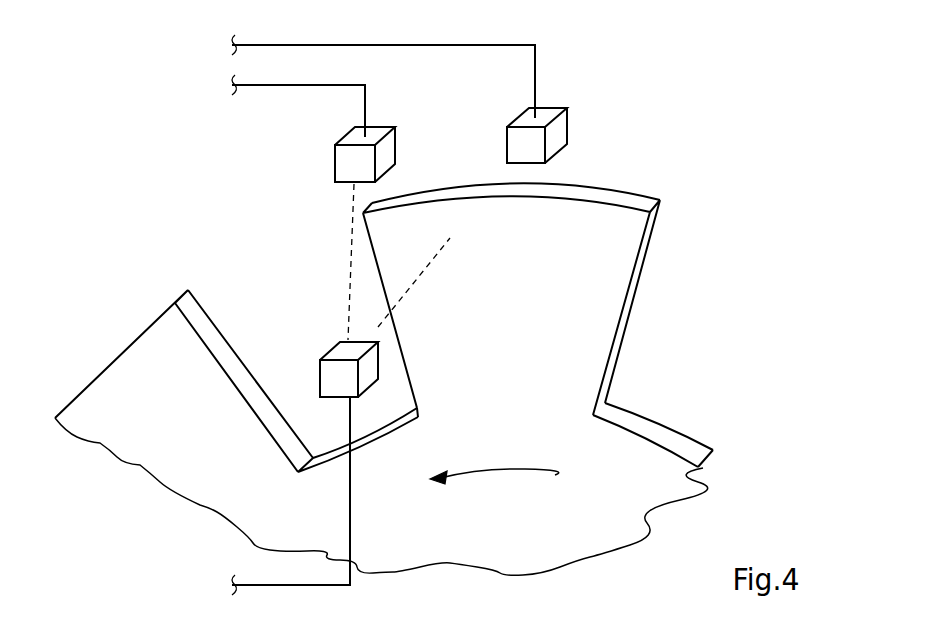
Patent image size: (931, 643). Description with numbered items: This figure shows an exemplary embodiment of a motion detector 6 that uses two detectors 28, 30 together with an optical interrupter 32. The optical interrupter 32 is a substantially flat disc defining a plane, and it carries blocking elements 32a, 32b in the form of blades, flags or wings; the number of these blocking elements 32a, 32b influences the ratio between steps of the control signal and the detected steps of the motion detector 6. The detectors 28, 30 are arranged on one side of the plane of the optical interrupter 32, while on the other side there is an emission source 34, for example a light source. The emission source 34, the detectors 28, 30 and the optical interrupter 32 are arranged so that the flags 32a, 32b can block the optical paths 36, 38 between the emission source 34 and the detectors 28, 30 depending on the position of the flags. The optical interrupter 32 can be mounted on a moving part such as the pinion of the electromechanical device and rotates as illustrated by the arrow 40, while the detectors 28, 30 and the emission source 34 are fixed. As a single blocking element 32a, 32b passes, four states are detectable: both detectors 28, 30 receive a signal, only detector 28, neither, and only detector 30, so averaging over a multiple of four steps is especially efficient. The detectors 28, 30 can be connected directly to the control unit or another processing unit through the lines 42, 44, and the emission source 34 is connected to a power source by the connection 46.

The motion detector 6 is at (118, 142).
The detector 28 is at (397, 140).
The detector 30 is at (567, 123).
The optical interrupter 32 is at (640, 465).
The blocking element 32a is at (610, 238).
The blocking element 32b is at (158, 342).
The emission source 34 is at (318, 365).
The optical path 36 is at (347, 260).
The optical path 38 is at (433, 262).
The arrow 40 is at (525, 469).
The connection line 42 is at (367, 100).
The connection line 44 is at (537, 70).
The connection 46 is at (352, 490).